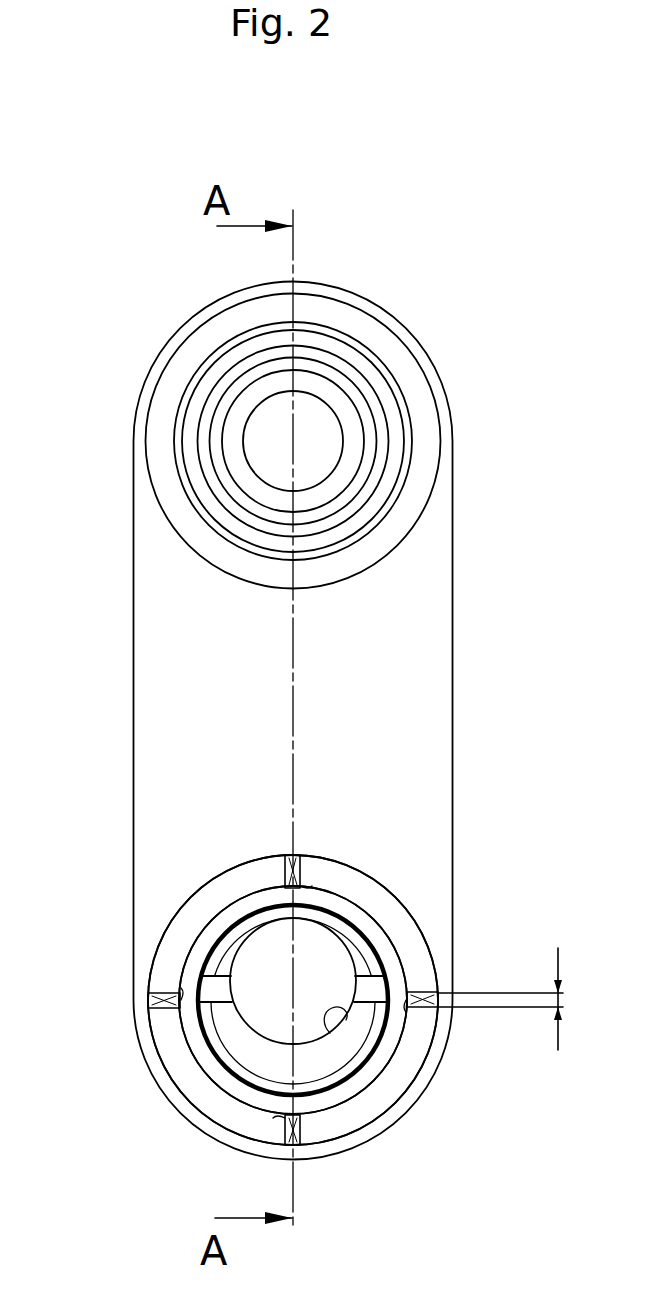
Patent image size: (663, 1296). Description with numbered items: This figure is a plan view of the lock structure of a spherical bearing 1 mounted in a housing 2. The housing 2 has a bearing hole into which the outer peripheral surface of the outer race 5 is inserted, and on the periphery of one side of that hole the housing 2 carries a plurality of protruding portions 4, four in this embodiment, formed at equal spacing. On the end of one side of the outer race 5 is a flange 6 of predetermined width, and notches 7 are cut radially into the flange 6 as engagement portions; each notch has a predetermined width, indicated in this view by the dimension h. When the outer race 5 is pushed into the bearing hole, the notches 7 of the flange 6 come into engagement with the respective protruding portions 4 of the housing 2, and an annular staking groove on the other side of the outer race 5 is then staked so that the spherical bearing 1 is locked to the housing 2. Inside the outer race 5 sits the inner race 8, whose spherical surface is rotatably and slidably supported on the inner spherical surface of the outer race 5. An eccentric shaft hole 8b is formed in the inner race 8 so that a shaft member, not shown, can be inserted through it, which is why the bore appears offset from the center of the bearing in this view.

The spherical bearing 1 is at (184, 890).
The housing 2 is at (456, 758).
The protruding portions 4 is at (277, 858).
The outer race 5 is at (183, 1062).
The flange 6 is at (210, 1105).
The notches 7 is at (315, 888).
The inner race 8 is at (330, 1062).
The eccentric shaft hole 8b is at (330, 1033).
The width of notch h is at (563, 1000).